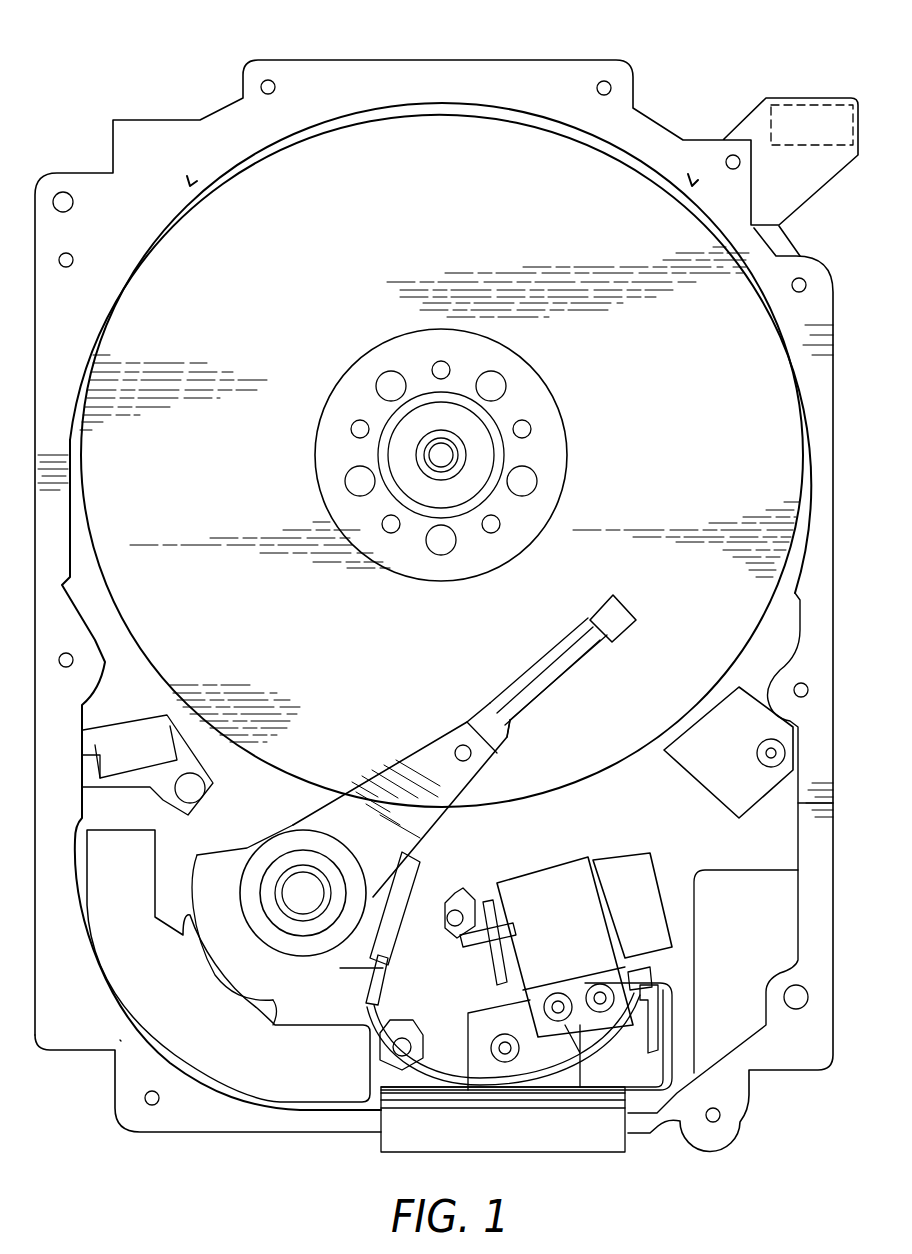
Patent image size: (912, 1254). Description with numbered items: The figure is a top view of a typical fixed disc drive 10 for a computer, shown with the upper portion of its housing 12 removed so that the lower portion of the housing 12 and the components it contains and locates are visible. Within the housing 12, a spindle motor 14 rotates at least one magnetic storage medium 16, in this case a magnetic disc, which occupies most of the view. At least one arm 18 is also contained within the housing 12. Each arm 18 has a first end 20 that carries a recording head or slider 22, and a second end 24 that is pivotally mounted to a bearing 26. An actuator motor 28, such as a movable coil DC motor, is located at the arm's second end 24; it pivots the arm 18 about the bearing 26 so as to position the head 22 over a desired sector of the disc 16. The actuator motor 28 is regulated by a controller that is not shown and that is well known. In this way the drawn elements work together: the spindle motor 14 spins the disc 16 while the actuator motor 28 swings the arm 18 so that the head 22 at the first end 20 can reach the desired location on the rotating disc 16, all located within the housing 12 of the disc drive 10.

The fixed disc drive 10 is at (92, 112).
The housing 12 is at (584, 75).
The spindle motor 14 is at (432, 462).
The magnetic storage medium 16 is at (347, 241).
The arm 18 is at (425, 768).
The first end 20 is at (552, 648).
The recording head 22 is at (608, 615).
The second end 24 is at (330, 830).
The bearing 26 is at (293, 885).
The actuator motor 28 is at (190, 1017).